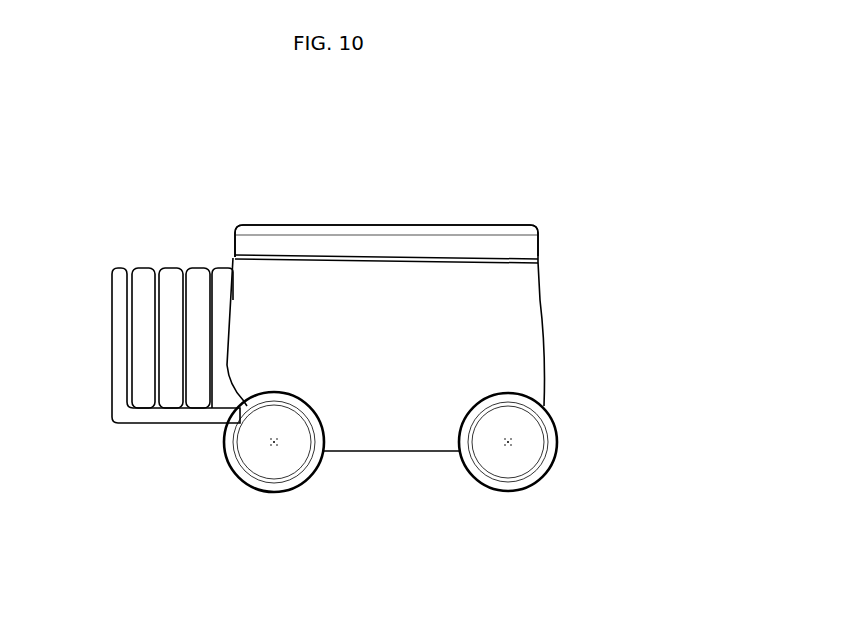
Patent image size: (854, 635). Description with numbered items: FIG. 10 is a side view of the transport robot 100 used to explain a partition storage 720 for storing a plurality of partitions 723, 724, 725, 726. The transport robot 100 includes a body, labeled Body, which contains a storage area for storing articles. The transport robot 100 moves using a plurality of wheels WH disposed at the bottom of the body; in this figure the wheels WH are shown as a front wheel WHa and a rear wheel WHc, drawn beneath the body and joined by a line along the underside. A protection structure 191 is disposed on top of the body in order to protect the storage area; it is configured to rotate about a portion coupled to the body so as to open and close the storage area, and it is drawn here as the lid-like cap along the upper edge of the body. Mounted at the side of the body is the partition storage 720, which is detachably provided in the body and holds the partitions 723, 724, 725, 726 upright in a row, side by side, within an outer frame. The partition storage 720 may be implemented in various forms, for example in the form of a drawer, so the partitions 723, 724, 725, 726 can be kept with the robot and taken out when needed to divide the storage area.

The transport robot 100 is at (559, 197).
The protection structure 191 is at (428, 233).
The body Body is at (558, 315).
The partition storage 720 is at (154, 425).
The partition 723 is at (146, 271).
The partition 724 is at (172, 271).
The partition 725 is at (198, 271).
The partition 726 is at (228, 271).
The wheel WHa is at (278, 493).
The wheel WHc is at (505, 491).
The wheels WH is at (530, 553).